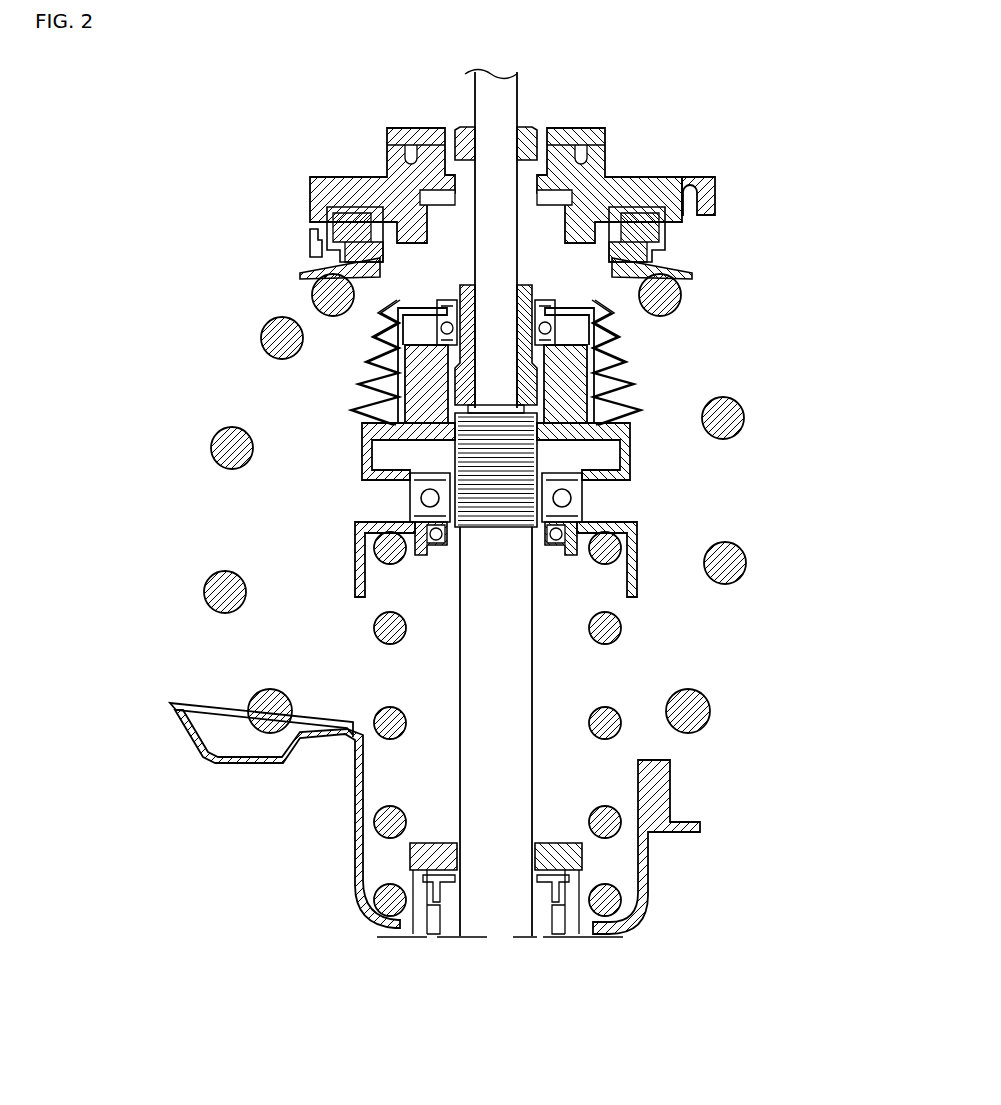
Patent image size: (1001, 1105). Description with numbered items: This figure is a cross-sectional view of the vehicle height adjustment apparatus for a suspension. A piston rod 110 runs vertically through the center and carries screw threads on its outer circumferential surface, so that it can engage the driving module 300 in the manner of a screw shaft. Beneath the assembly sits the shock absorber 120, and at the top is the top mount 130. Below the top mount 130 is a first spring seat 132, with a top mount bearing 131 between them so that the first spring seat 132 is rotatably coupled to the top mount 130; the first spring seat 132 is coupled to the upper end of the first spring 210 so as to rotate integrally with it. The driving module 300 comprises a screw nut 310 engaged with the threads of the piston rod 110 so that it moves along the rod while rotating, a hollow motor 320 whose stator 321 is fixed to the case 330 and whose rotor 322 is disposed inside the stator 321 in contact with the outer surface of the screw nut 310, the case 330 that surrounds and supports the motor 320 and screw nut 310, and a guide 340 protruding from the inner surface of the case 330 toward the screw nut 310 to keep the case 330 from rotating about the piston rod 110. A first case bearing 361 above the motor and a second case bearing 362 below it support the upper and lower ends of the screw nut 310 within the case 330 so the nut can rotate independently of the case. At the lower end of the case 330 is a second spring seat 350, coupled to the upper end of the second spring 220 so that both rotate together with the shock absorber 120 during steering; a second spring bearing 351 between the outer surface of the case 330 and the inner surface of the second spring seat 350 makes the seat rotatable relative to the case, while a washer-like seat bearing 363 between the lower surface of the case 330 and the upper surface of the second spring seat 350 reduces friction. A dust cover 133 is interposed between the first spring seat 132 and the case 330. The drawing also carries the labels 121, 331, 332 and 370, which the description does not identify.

The piston rod 110 is at (495, 893).
The shock absorber 120 is at (363, 896).
The bracket arm 121 is at (353, 838).
The top mount 130 is at (643, 175).
The top mount bearing 131 is at (653, 232).
The first spring seat 132 is at (650, 263).
The dust cover 133 is at (365, 343).
The first spring 210 is at (204, 594).
The second spring 220 is at (608, 818).
The driving module 300 is at (657, 425).
The screw nut 310 is at (540, 448).
The motor 320 is at (765, 312).
The stator 321 is at (578, 392).
The rotor 322 is at (598, 352).
The case 330 is at (118, 402).
The bellows 331 is at (400, 380).
The housing flange 332 is at (364, 444).
The guide 340 is at (518, 538).
The second spring seat 350 is at (644, 557).
The second spring bearing 351 is at (433, 546).
The first case bearing 361 is at (440, 318).
The second case bearing 362 is at (585, 500).
The seat bearing 363 is at (408, 496).
The sleeve 370 is at (462, 307).